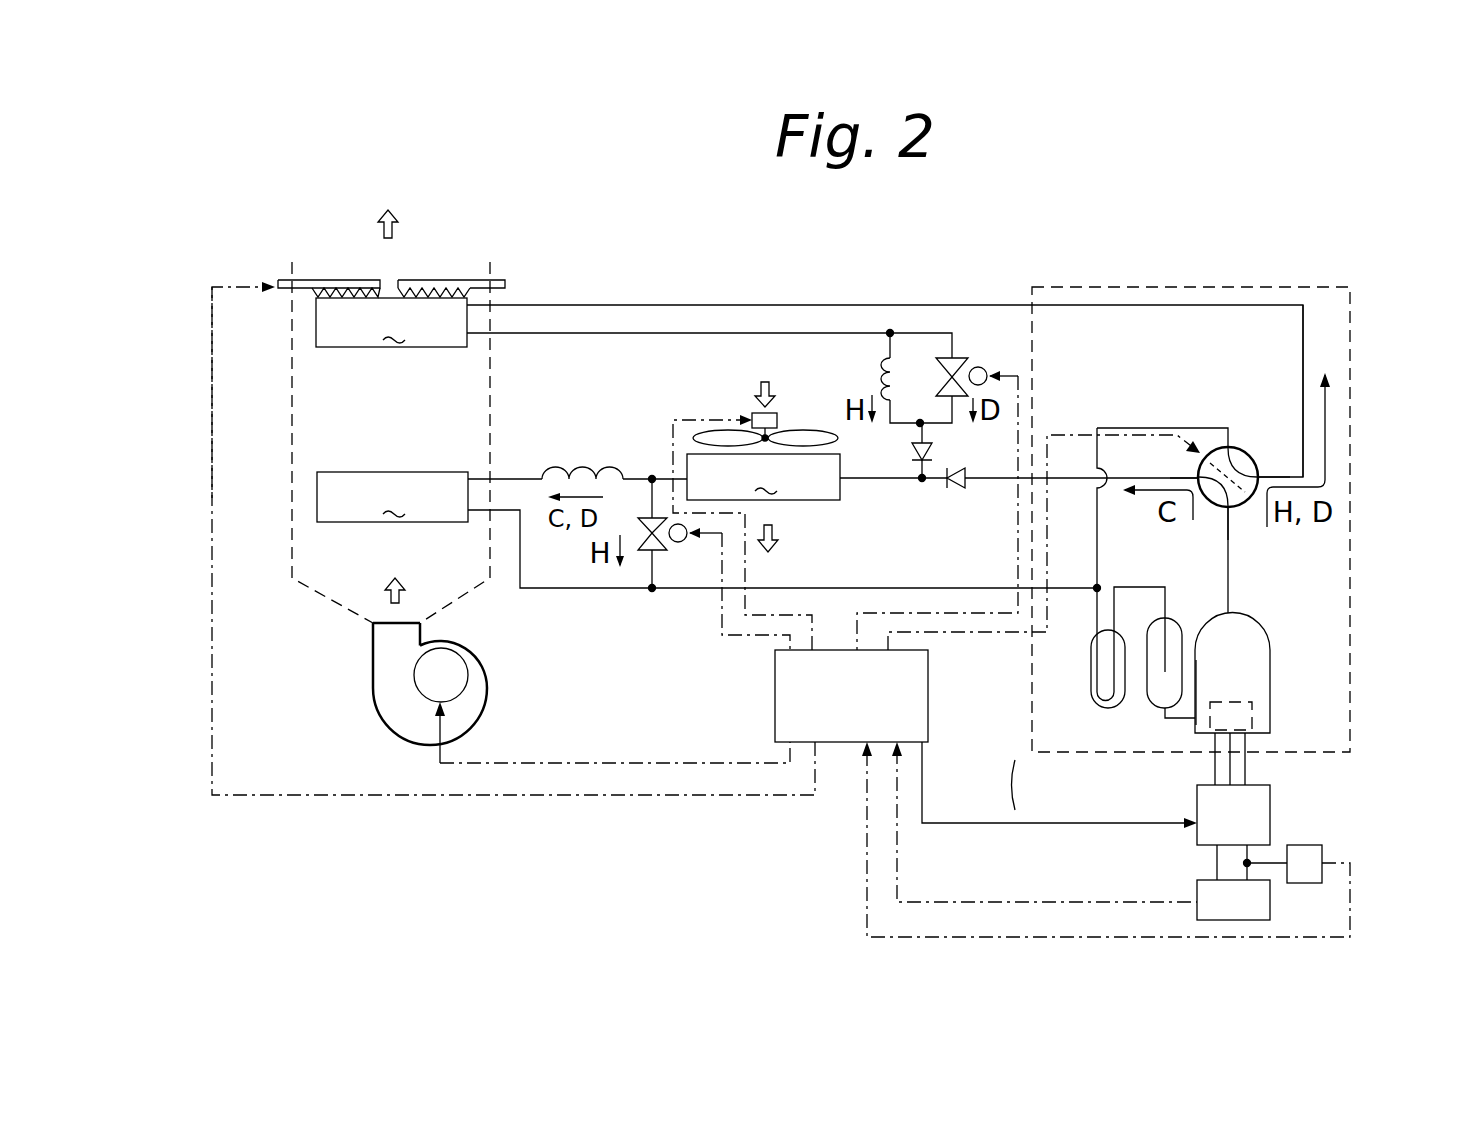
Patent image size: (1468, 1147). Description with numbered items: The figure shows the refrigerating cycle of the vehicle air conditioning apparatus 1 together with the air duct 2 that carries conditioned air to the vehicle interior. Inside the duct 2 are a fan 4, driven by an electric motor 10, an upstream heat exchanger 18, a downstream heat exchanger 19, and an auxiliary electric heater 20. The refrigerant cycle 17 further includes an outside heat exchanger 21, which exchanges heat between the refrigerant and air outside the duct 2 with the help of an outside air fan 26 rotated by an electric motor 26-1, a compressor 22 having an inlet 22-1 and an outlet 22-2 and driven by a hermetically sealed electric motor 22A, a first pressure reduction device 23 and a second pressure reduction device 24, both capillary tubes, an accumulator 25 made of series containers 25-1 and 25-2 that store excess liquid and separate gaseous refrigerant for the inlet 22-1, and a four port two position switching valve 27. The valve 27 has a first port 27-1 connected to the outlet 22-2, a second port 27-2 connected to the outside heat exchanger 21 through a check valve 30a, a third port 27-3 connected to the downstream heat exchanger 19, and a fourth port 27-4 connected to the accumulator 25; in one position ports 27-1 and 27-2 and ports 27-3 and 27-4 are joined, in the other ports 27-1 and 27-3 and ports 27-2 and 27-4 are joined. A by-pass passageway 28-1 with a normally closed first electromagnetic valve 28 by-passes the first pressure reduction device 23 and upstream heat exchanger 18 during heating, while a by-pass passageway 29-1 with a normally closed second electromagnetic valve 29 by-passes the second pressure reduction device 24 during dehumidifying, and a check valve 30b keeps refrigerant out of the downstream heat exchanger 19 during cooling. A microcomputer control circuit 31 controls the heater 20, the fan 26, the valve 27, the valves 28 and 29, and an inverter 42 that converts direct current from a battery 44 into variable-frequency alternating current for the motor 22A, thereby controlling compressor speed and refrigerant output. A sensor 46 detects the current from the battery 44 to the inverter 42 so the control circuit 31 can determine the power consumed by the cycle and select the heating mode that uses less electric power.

The air conditioning apparatus 1 is at (262, 264).
The duct 2 is at (291, 405).
The fan 4 is at (383, 710).
The electric motor 10 is at (468, 682).
The refrigerant cycle 17 is at (960, 285).
The upstream heat exchanger 18 is at (392, 497).
The downstream heat exchanger 19 is at (391, 322).
The auxiliary heater 20 is at (380, 279).
The outside heat exchanger 21 is at (763, 477).
The compressor 22 is at (1270, 660).
The inlet 22-1 is at (1198, 715).
The outlet 22-2 is at (1240, 623).
The electric motor 22A is at (1252, 715).
The first pressure reduction device 23 is at (588, 465).
The second pressure reduction device 24 is at (880, 358).
The accumulator 25 is at (950, 797).
The container 25-1 is at (1091, 660).
The container 25-2 is at (1147, 700).
The outside air fan 26 is at (806, 430).
The electric motor 26-1 is at (752, 413).
The four port two position flow direction switching valve 27 is at (1257, 457).
The first port 27-1 is at (1210, 501).
The second port 27-2 is at (1208, 455).
The third port 27-3 is at (1255, 462).
The fourth port 27-4 is at (1243, 447).
The first electromagnetic valve 28 is at (678, 542).
The by-pass passageway 28-1 is at (650, 577).
The second electromagnetic valve 29 is at (980, 366).
The by-pass passageway 29-1 is at (952, 342).
The check valve 30a is at (957, 490).
The check valve 30b is at (910, 450).
The control circuit 31 is at (775, 708).
The inverter 42 is at (1270, 800).
The battery 44 is at (1197, 877).
The sensor 46 is at (1322, 850).